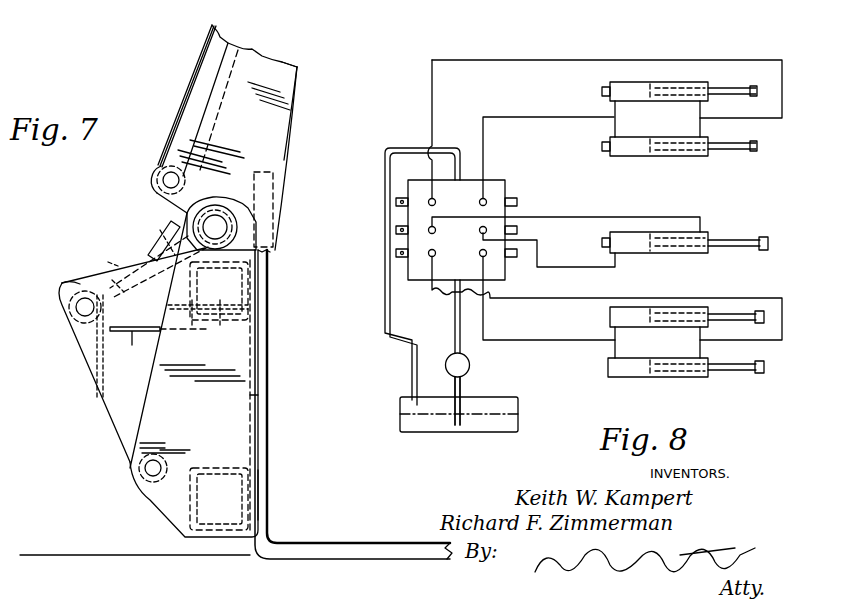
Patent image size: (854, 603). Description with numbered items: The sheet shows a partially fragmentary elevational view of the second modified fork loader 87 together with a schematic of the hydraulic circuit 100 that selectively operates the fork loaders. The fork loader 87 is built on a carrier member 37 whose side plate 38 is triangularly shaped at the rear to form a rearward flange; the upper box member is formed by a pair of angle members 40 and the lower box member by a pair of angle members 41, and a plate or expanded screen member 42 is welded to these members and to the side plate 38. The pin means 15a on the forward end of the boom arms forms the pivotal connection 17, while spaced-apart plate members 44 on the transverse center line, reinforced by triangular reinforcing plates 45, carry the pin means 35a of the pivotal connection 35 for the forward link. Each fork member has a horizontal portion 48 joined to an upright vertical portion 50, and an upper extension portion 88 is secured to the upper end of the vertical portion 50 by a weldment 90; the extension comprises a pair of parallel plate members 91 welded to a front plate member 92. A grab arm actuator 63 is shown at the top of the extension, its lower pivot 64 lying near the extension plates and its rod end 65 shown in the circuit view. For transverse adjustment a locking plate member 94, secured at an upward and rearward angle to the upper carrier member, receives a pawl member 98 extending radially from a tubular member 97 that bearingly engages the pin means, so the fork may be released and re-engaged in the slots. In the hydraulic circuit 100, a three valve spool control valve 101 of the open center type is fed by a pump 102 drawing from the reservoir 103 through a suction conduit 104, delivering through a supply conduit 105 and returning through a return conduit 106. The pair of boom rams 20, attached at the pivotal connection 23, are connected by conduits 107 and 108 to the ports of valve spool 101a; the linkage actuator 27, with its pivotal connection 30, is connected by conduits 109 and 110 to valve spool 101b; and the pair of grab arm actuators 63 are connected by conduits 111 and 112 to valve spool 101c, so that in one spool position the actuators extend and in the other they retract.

In FIG. 7, the pin means 15a is at (171, 446).
In FIG. 7, the pivotal connection 17 is at (150, 478).
In FIG. 8, the double-acting hydraulic ram 20 is at (608, 321).
In FIG. 8, the pivotal connection 23 is at (763, 309).
In FIG. 8, the double-acting actuator 27 is at (708, 232).
In FIG. 8, the pivotal connection 30 is at (763, 237).
In FIG. 7, the pivotal connection 35 is at (76, 305).
In FIG. 7, the pin means 35a is at (62, 285).
In FIG. 7, the carrier member 37 is at (246, 379).
In FIG. 7, the side plate 38 is at (142, 428).
In FIG. 7, the angle members 40 is at (248, 292).
In FIG. 7, the angle members 41 is at (245, 504).
In FIG. 7, the plate or expanded screen member 42 is at (252, 402).
In FIG. 7, the spaced-apart plate members 44 is at (95, 368).
In FIG. 7, the reinforcing plates 45 is at (122, 262).
In FIG. 7, the horizontal portion 48 is at (348, 545).
In FIG. 7, the vertical portion 50 is at (268, 443).
In FIG. 8, the vertical portion 50 is at (640, 2).
In FIG. 7, the double-acting actuator 63 is at (181, 90).
In FIG. 8, the double-acting actuator 63 is at (625, 83).
In FIG. 7, the cylinder pivot pin 64 is at (160, 180).
In FIG. 8, the clamp cylinder piston rod 65 is at (760, 86).
In FIG. 7, the fork loader 87 is at (309, 487).
In FIG. 7, the upper extension portion 88 is at (277, 136).
In FIG. 7, the weldment 90 is at (280, 239).
In FIG. 7, the plate members 91 is at (296, 82).
In FIG. 7, the front plate member 92 is at (278, 161).
In FIG. 7, the plate member 94 is at (170, 229).
In FIG. 7, the tubular member 97 is at (186, 213).
In FIG. 7, the pawl member 98 is at (153, 258).
In FIG. 8, the hydraulic circuit 100 is at (412, 132).
In FIG. 8, the three valve spool control valve 101 is at (503, 183).
In FIG. 8, the valve spool 101a is at (397, 258).
In FIG. 8, the valve spool 101b is at (397, 231).
In FIG. 8, the valve spool 101c is at (396, 202).
In FIG. 8, the pump 102 is at (470, 364).
In FIG. 8, the reservoir 103 is at (520, 422).
In FIG. 8, the suction conduit 104 is at (461, 386).
In FIG. 8, the supply conduit 105 is at (455, 315).
In FIG. 8, the return conduit 106 is at (445, 148).
In FIG. 8, the conduit 107 is at (563, 341).
In FIG. 8, the conduit 108 is at (604, 298).
In FIG. 8, the conduit 109 is at (563, 266).
In FIG. 8, the conduit 110 is at (575, 217).
In FIG. 8, the conduit 111 is at (530, 117).
In FIG. 8, the conduit 112 is at (522, 60).